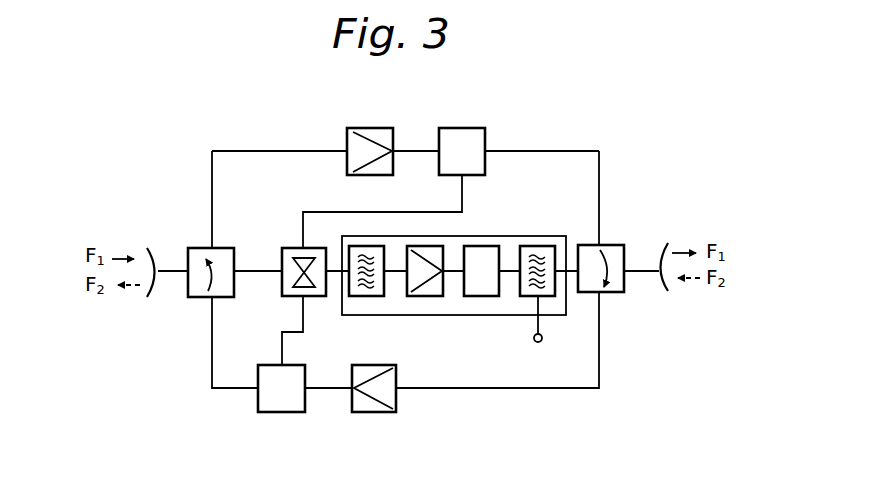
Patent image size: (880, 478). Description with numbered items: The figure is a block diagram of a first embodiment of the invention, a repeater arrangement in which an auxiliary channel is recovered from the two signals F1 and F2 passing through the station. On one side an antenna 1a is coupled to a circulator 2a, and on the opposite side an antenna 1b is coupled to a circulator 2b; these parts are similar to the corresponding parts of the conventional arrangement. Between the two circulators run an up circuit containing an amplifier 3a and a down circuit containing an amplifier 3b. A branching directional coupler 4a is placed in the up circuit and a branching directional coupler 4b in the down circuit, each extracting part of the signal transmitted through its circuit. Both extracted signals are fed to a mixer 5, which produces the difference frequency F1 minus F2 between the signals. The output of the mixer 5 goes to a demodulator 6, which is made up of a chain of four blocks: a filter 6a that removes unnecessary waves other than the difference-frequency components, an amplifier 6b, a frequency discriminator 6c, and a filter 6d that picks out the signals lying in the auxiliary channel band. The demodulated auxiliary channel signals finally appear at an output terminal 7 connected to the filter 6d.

The antenna 1a is at (150, 250).
The antenna 1b is at (668, 292).
The circulator 2a is at (197, 297).
The circulator 2b is at (612, 245).
The amplifier 3a is at (381, 128).
The amplifier 3b is at (385, 412).
The branching directional coupler 4a is at (474, 128).
The branching directional coupler 4b is at (302, 440).
The mixer 5 is at (293, 248).
The demodulator 6 is at (478, 236).
The filter 6a is at (366, 296).
The amplifier 6b is at (433, 246).
The frequency discriminator 6c is at (480, 296).
The filter 6d is at (546, 296).
The output terminal 7 is at (540, 334).